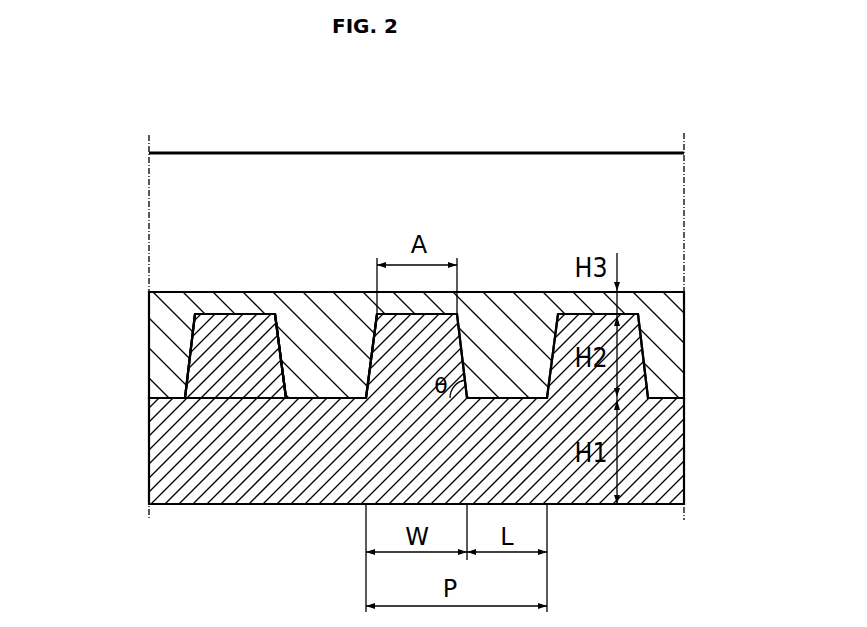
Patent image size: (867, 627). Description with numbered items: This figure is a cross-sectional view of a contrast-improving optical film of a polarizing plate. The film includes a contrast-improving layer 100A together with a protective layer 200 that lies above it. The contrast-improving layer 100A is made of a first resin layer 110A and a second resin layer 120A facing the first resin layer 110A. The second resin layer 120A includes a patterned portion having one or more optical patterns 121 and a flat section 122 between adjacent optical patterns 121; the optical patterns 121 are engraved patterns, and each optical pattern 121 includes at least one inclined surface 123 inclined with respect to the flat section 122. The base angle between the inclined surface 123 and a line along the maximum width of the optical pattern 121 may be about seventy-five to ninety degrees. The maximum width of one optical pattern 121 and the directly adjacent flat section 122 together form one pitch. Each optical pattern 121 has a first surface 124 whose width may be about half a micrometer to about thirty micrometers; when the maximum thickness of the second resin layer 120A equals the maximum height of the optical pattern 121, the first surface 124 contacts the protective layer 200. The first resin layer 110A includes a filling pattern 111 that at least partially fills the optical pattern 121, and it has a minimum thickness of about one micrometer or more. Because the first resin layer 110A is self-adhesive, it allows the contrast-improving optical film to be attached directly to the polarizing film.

The protective layer 200 is at (672, 200).
The contrast-improving layer 100A is at (408, 398).
The second resin layer 120A is at (158, 350).
The first resin layer 110A is at (158, 455).
The filling pattern 111 is at (222, 378).
The optical pattern 121 is at (280, 357).
The flat section 122 is at (311, 399).
The inclined surface 123 is at (375, 338).
The first surface 124 is at (238, 313).